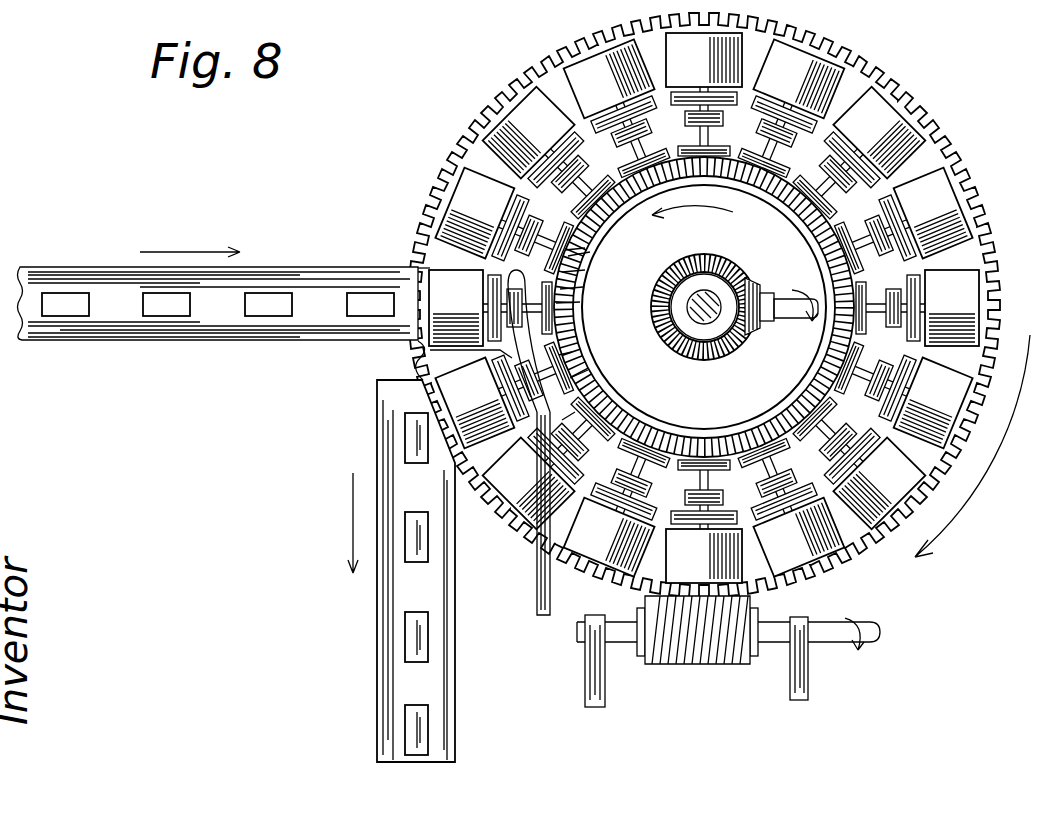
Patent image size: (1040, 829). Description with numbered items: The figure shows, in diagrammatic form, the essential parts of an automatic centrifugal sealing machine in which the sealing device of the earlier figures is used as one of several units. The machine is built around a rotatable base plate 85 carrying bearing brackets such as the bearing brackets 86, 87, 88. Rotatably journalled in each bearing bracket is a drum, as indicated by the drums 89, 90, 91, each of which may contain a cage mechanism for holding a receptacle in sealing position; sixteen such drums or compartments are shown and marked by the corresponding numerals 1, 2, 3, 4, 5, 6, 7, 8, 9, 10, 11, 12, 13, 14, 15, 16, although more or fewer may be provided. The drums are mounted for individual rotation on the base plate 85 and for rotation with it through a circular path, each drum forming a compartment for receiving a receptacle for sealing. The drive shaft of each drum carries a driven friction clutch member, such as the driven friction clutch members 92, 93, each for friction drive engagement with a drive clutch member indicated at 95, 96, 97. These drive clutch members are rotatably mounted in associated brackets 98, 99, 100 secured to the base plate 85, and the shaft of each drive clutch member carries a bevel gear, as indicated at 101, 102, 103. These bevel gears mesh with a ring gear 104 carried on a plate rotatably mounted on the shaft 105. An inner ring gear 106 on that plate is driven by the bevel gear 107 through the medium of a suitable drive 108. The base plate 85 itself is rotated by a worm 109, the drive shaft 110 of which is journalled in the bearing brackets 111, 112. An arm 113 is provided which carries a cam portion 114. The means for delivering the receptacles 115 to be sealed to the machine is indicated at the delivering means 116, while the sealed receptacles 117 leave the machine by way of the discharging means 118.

The drum compartment 1 is at (490, 308).
The drum compartment 2 is at (506, 226).
The drum compartment 3 is at (553, 157).
The drum compartment 4 is at (622, 110).
The drum compartment 5 is at (704, 94).
The drum compartment 6 is at (785, 110).
The drum compartment 7 is at (855, 157).
The drum compartment 8 is at (901, 226).
The drum compartment 9 is at (917, 308).
The drum compartment 10 is at (901, 389).
The drum compartment 11 is at (855, 459).
The drum compartment 12 is at (785, 505).
The drum compartment 13 is at (704, 521).
The drum compartment 14 is at (622, 505).
The drum compartment 15 is at (553, 459).
The drum compartment 16 is at (506, 389).
The base plate 85 is at (472, 140).
The bearing bracket 86 is at (442, 186).
The bearing bracket 87 is at (420, 246).
The bearing bracket 88 is at (415, 355).
The drum 89 is at (430, 206).
The drum 90 is at (428, 283).
The drum 91 is at (452, 382).
The driven friction clutch member 92 is at (510, 313).
The driven friction clutch member 93 is at (449, 325).
The drive clutch member 95 is at (555, 215).
The drive clutch member 96 is at (585, 270).
The drive clutch member 97 is at (575, 412).
The bracket 98 is at (585, 248).
The bracket 99 is at (583, 287).
The bracket 100 is at (588, 370).
The bevel gear 101 is at (590, 252).
The bevel gear 102 is at (580, 302).
The bevel gear 103 is at (572, 352).
The ring gear 104 is at (734, 213).
The shaft 105 is at (728, 287).
The inner ring gear 106 is at (706, 366).
The bevel gear 107 is at (766, 300).
The drive 108 is at (778, 327).
The worm 109 is at (704, 667).
The drive shaft 110 is at (627, 643).
The bearing bracket 111 is at (585, 668).
The bearing bracket 112 is at (808, 670).
The arm 113 is at (537, 578).
The cam portion 114 is at (576, 322).
The receptacles 115 is at (218, 304).
The delivering means 116 is at (193, 341).
The sealed receptacles 117 is at (415, 437).
The discharging means 118 is at (382, 596).